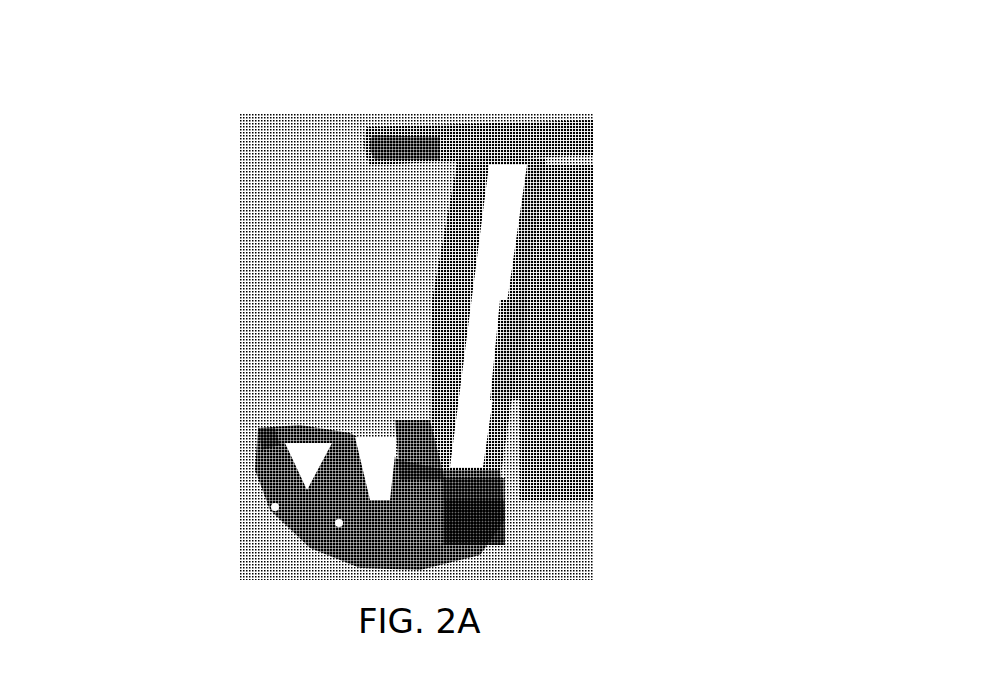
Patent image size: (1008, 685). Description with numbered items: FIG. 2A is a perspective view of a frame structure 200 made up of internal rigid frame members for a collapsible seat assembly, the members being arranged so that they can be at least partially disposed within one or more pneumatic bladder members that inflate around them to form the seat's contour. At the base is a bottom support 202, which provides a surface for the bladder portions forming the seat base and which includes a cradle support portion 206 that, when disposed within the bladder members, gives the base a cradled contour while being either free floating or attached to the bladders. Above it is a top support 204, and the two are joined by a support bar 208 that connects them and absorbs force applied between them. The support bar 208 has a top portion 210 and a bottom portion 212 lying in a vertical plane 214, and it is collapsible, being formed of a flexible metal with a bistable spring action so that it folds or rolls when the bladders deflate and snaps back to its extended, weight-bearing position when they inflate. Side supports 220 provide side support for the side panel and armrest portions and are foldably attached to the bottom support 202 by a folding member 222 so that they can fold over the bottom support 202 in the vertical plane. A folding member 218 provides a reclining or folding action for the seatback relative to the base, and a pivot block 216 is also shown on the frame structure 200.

The frame structure 200 is at (176, 60).
The bottom support 202 is at (345, 560).
The top support 204 is at (565, 138).
The cradle support portion 206 is at (287, 523).
The support bar 208 is at (442, 277).
The top portion 210 is at (483, 302).
The bottom portion 212 is at (475, 398).
The vertical plane 214 is at (432, 312).
The pivot block 216 is at (463, 480).
The folding member 218 is at (475, 507).
The side supports 220 is at (418, 428).
The folding member 222 is at (273, 508).